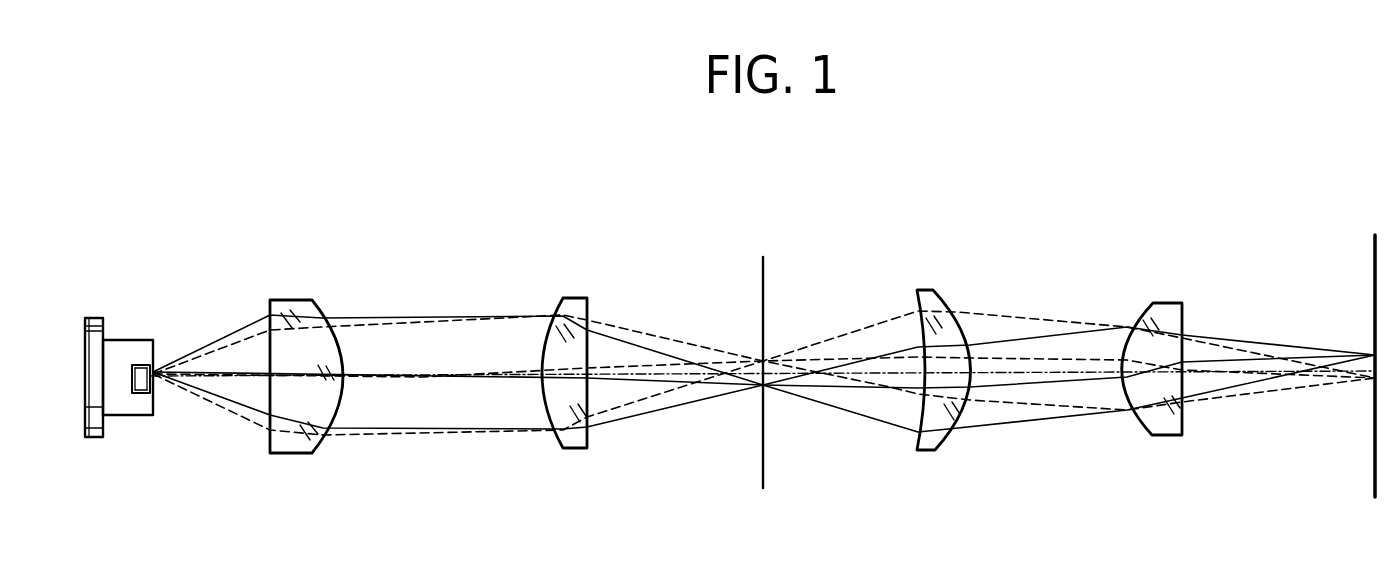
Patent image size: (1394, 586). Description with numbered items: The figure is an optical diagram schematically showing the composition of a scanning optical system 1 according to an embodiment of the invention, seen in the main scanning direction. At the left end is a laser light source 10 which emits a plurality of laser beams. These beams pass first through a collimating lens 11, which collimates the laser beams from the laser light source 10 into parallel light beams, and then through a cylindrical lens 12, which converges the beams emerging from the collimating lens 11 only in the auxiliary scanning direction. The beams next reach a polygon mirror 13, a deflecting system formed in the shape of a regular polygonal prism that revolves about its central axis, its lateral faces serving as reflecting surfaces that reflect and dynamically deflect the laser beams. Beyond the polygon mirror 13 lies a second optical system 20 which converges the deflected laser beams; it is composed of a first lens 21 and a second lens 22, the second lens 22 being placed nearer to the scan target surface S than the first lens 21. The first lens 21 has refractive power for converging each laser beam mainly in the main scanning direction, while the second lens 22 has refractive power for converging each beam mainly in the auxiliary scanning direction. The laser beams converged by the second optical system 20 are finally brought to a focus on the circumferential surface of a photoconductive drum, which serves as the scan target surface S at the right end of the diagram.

The scanning optical system 1 is at (1160, 157).
The laser light source 10 is at (130, 416).
The collimating lens 11 is at (288, 300).
The cylindrical lens 12 is at (570, 298).
The polygon mirror 13 is at (763, 287).
The second optical system 20 is at (1195, 228).
The first lens 21 is at (940, 298).
The second lens 22 is at (1153, 303).
The scan target surface S is at (1375, 265).